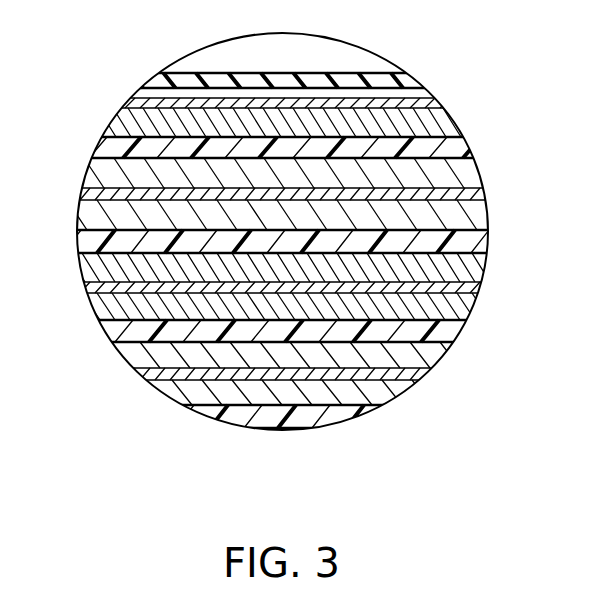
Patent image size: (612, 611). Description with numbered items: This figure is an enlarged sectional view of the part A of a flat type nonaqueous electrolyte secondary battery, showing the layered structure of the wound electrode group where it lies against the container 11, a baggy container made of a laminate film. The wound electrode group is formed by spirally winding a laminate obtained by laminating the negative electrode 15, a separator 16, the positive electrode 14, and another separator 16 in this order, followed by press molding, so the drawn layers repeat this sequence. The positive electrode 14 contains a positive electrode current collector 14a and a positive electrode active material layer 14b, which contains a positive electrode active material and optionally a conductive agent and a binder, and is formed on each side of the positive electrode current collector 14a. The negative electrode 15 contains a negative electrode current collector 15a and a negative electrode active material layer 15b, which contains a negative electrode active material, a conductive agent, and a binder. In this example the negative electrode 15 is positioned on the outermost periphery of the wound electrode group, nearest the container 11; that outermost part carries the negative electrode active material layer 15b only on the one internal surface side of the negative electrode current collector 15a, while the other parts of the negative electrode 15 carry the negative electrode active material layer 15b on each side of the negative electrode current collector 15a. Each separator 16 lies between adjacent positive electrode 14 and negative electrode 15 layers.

The part A is at (190, 70).
The container 11 is at (404, 83).
The positive electrode 14 is at (313, 295).
The positive electrode current collector 14a is at (460, 197).
The positive electrode active material layer 14b is at (467, 180).
The negative electrode 15 is at (307, 201).
The negative electrode current collector 15a is at (436, 99).
The negative electrode active material layer 15b is at (427, 127).
The separator 16 is at (108, 148).